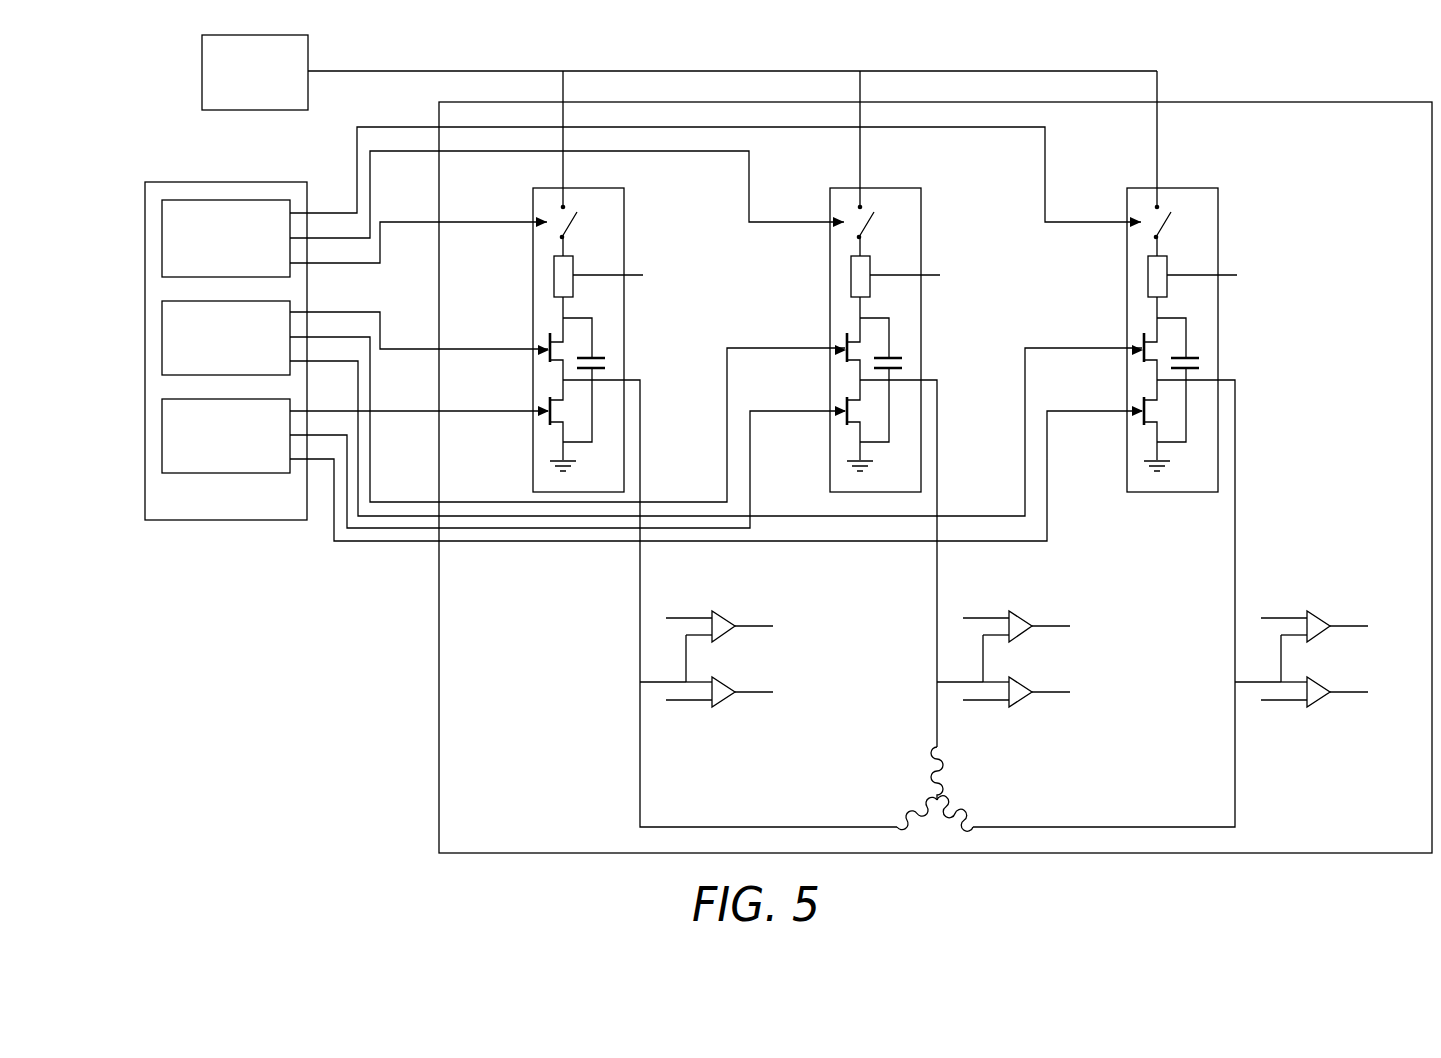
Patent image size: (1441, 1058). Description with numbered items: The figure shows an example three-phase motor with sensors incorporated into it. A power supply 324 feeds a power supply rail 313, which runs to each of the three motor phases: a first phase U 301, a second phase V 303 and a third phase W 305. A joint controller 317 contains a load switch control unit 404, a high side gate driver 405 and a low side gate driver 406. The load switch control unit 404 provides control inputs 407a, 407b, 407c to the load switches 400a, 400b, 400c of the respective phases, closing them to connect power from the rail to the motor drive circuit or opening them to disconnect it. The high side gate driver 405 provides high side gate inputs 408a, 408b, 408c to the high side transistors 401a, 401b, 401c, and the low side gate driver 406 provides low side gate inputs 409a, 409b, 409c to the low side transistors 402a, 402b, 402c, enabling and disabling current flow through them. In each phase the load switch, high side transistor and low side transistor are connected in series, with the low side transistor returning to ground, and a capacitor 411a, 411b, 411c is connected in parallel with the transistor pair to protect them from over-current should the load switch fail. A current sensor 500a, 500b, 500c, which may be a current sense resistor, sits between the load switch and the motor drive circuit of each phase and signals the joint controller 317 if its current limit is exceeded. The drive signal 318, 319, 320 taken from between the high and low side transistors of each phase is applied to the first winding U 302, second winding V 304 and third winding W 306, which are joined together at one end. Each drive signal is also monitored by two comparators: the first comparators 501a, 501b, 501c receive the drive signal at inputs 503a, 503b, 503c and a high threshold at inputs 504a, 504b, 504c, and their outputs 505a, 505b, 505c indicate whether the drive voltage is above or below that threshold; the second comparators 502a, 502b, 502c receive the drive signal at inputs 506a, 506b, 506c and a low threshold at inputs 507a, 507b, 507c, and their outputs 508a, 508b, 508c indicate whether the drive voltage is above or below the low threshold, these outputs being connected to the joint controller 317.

The power supply 324 is at (202, 51).
The power supply rail 313 is at (1128, 70).
The load switch control unit 404 is at (161, 213).
The high side gate driver 405 is at (161, 313).
The low side gate driver 406 is at (161, 411).
The joint controller 317 is at (280, 525).
The control input 407a is at (488, 220).
The control input 407b is at (751, 167).
The control input 407c is at (1052, 145).
The high side gate input 408a is at (410, 347).
The high side gate input 408b is at (735, 348).
The high side gate input 408c is at (1035, 348).
The low side gate input 409a is at (487, 413).
The low side gate input 409b is at (748, 477).
The low side gate input 409c is at (1048, 519).
The first phase U 301 is at (624, 207).
The second phase V 303 is at (913, 340).
The third phase W 305 is at (1210, 340).
The load switch 400a is at (578, 226).
The load switch 400b is at (921, 230).
The load switch 400c is at (1218, 230).
The current sensor 500a is at (554, 270).
The current sensor 500b is at (851, 287).
The current sensor 500c is at (1148, 287).
The high side transistor 401a is at (547, 344).
The high side transistor 401b is at (810, 346).
The high side transistor 401c is at (1107, 346).
The low side transistor 402a is at (545, 400).
The low side transistor 402b is at (810, 407).
The low side transistor 402c is at (1107, 407).
The capacitor 411a is at (592, 328).
The capacitor 411b is at (922, 380).
The capacitor 411c is at (1219, 380).
The drive signal 318 is at (642, 397).
The drive signal 319 is at (939, 396).
The drive signal 320 is at (1237, 396).
The first comparator 501a is at (727, 612).
The first comparator 501b is at (1025, 601).
The first comparator 501c is at (1322, 601).
The second comparator 502a is at (728, 705).
The second comparator 502b is at (1038, 720).
The second comparator 502c is at (1335, 720).
The input 503a is at (686, 650).
The input 503b is at (926, 658).
The input 503c is at (1224, 658).
The input 504a is at (686, 615).
The input 504b is at (983, 588).
The input 504c is at (1281, 588).
The output 505a is at (760, 620).
The output 505b is at (1077, 602).
The output 505c is at (1374, 602).
The input 506a is at (700, 678).
The input 506b is at (1032, 659).
The input 506c is at (1330, 659).
The input 507a is at (686, 703).
The input 507b is at (983, 731).
The input 507c is at (1281, 731).
The output 508a is at (762, 695).
The output 508b is at (1077, 717).
The output 508c is at (1374, 717).
The first winding U 302 is at (910, 807).
The second winding V 304 is at (928, 744).
The third winding W 306 is at (960, 798).